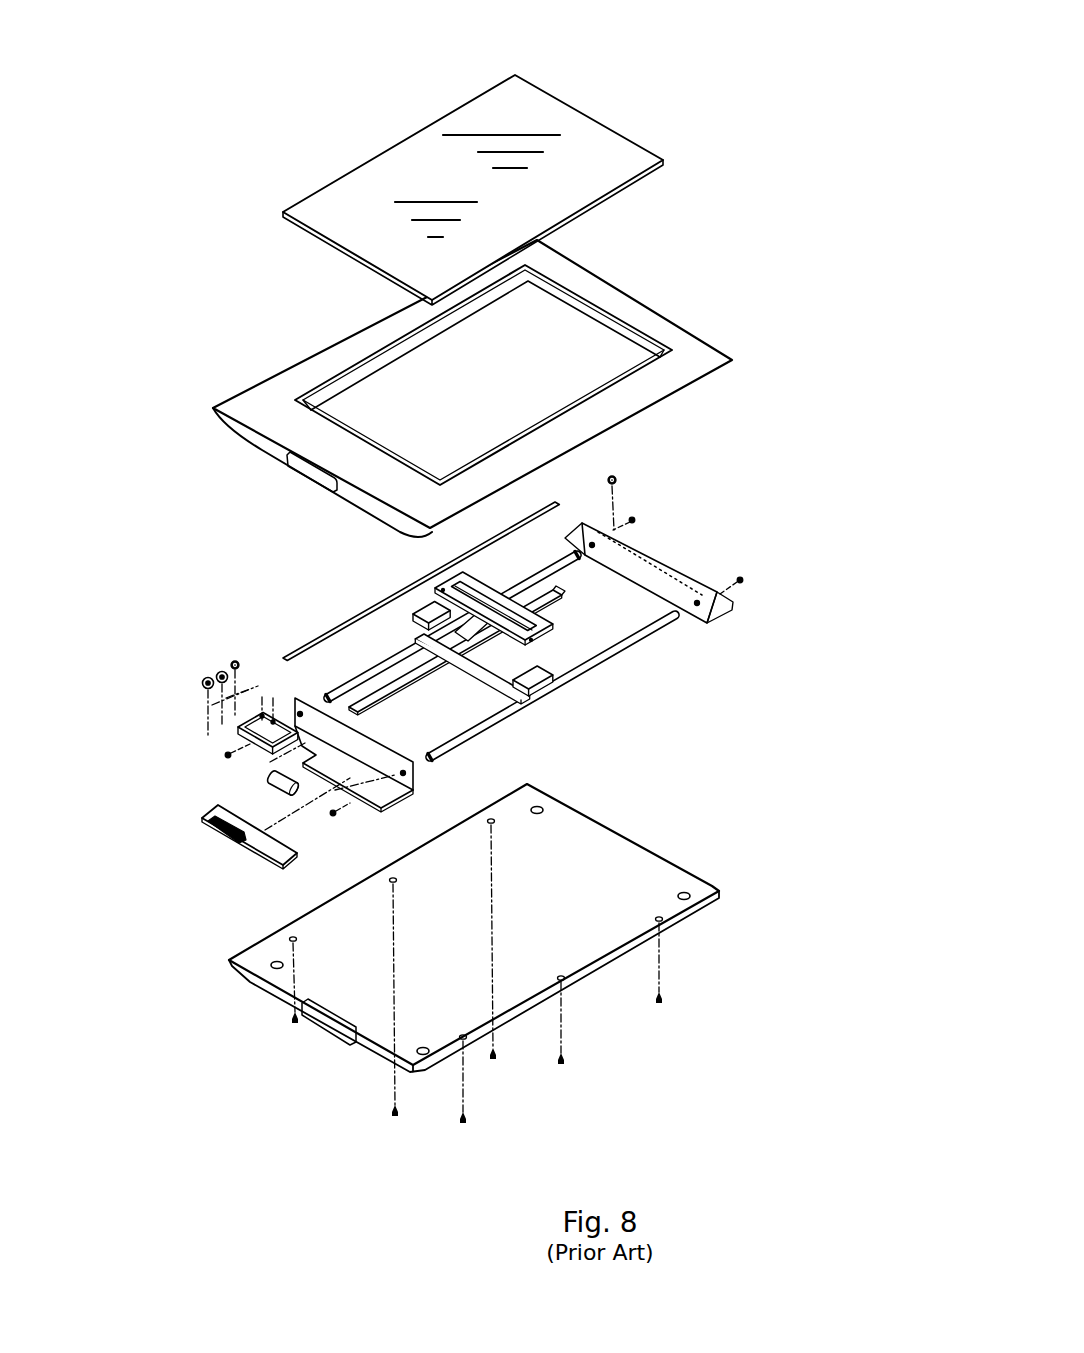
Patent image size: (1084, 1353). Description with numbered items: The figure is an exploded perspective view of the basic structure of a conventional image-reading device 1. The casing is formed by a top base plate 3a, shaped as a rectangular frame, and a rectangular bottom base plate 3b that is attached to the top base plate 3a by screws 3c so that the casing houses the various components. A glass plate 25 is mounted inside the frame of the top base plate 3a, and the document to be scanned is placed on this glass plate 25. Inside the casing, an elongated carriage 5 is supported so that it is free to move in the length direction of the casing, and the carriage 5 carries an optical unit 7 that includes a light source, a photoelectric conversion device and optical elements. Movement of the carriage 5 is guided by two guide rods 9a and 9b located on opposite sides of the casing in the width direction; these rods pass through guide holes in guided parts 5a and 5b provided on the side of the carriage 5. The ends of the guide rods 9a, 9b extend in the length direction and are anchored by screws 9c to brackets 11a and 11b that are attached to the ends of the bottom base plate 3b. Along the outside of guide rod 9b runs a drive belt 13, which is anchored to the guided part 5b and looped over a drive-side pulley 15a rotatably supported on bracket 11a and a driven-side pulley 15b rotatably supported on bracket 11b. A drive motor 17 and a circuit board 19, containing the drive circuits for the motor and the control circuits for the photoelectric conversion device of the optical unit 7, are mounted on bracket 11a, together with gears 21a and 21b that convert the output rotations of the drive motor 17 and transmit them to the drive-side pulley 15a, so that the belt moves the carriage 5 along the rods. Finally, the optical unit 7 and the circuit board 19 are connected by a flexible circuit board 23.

The image-reading device 1 is at (783, 455).
The top base plate 3a is at (689, 328).
The bottom base plate 3b is at (648, 866).
The screws 3c is at (295, 1024).
The carriage 5 is at (463, 656).
The guided part 5a is at (538, 692).
The guided part 5b is at (428, 606).
The optical unit 7 is at (528, 604).
The guide rod 9a is at (618, 655).
The guide rod 9b is at (366, 680).
The screws 9c is at (634, 517).
The bracket 11a is at (350, 798).
The bracket 11b is at (693, 590).
The drive belt 13 is at (304, 642).
The drive-side pulley 15a is at (237, 661).
The driven-side pulley 15b is at (617, 476).
The drive motor 17 is at (268, 783).
The circuit board 19 is at (265, 856).
The gear 21a is at (204, 678).
The gear 21b is at (221, 671).
The flexible circuit board 23 is at (428, 672).
The glass plate 25 is at (604, 135).